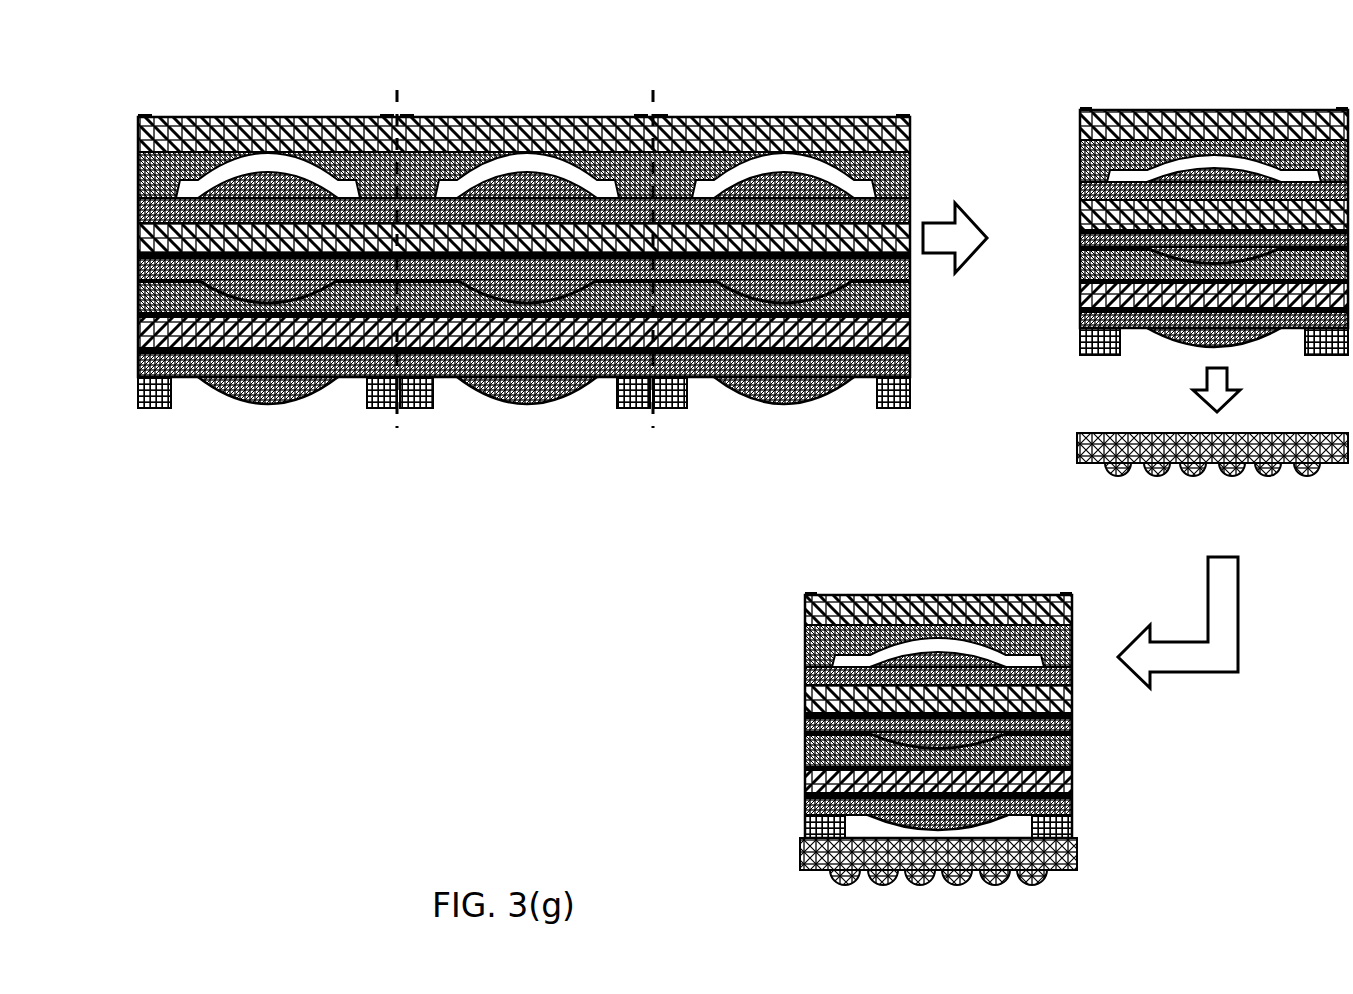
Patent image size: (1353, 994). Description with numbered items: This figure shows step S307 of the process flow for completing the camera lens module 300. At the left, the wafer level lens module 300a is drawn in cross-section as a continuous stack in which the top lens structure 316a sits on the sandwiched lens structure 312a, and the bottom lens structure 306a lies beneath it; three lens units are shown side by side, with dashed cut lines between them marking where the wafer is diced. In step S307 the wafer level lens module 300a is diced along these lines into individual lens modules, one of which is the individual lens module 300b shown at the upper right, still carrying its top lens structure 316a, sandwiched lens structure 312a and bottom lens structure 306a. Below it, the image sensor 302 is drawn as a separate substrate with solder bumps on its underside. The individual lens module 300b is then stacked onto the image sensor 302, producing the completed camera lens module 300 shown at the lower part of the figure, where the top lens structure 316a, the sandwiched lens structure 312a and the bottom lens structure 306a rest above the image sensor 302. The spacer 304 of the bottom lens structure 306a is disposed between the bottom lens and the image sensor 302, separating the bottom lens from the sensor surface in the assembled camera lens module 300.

The dicing and stacking step S307 is at (206, 68).
The wafer level lens module 300a is at (568, 94).
The individual lens module 300b is at (1091, 87).
The camera lens module 300 is at (970, 694).
The image sensor 302 is at (1077, 447).
The spacer 304 is at (1074, 824).
The top lens structure 316a is at (128, 116).
The sandwiched lens structure 312a is at (128, 207).
The bottom lens structure 306a is at (128, 320).